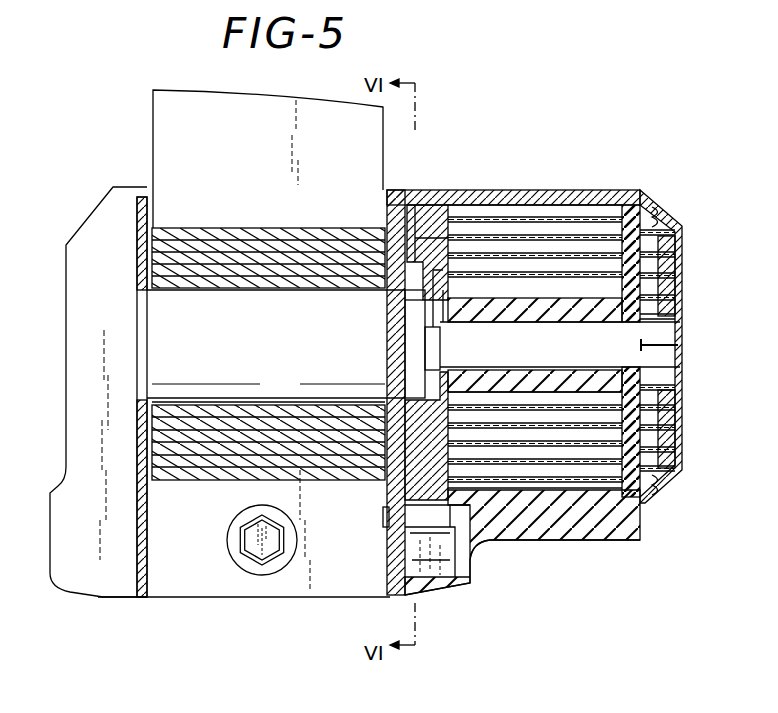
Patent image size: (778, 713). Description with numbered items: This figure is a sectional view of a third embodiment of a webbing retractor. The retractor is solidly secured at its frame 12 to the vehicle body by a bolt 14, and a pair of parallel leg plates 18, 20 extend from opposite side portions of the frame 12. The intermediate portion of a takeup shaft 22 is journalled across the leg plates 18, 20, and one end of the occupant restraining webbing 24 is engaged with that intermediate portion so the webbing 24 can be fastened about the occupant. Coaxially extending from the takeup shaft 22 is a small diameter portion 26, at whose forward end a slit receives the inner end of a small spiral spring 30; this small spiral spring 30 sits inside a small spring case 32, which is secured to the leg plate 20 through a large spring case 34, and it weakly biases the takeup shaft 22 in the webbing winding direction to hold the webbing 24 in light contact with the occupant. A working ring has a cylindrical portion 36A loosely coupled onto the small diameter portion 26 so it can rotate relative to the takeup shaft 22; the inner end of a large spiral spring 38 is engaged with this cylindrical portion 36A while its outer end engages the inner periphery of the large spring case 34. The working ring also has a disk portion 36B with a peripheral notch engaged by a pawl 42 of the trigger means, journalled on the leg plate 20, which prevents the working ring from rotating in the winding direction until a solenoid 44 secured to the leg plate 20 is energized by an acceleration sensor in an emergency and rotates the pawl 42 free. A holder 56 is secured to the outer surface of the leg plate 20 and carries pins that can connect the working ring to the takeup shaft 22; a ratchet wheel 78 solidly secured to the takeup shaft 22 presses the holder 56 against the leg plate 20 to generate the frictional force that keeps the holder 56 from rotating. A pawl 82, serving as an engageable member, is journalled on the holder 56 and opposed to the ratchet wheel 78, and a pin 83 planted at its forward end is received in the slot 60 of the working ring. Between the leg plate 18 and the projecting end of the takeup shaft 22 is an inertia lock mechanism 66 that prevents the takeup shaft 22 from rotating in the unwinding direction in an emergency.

The frame 12 is at (288, 597).
The bolt 14 is at (250, 549).
The leg plate 18 is at (148, 511).
The leg plate 20 is at (386, 581).
The takeup shaft 22 is at (307, 296).
The occupant restraining webbing 24 is at (230, 232).
The small diameter portion 26 is at (553, 327).
The small spiral spring 30 is at (678, 277).
The small spring case 32 is at (682, 325).
The large spring case 34 is at (553, 192).
The cylindrical portion 36A is at (503, 313).
The disk portion 36B is at (420, 205).
The large spiral spring 38 is at (614, 182).
The pawl 42 is at (386, 528).
The solenoid 44 is at (468, 570).
The holder 56 is at (386, 201).
The slot 60 is at (412, 300).
The inertia lock mechanism 66 is at (101, 572).
The ratchet wheel 78 is at (435, 272).
The pawl 82 is at (453, 205).
The pin 83 is at (414, 298).